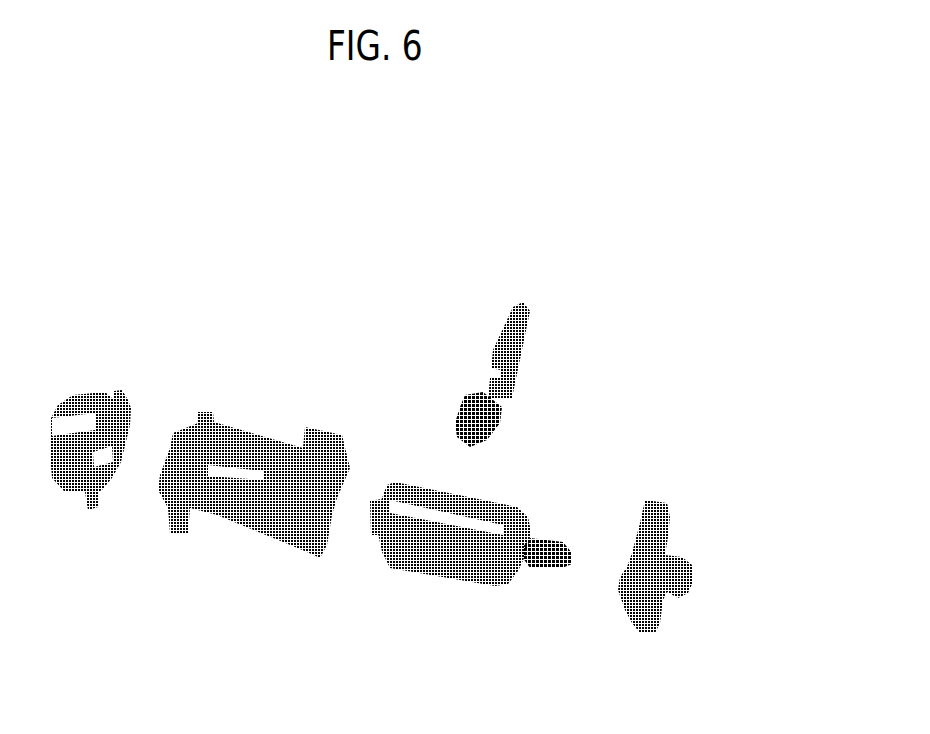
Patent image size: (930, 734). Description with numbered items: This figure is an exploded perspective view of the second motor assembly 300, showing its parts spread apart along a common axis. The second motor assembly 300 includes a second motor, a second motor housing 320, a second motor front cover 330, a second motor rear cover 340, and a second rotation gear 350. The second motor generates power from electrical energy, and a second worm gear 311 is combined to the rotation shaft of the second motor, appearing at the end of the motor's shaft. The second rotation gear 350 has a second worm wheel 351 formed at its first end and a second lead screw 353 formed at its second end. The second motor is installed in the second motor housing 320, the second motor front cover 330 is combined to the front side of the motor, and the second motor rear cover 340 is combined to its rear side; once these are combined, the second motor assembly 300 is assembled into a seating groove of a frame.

The second motor assembly 300 is at (634, 272).
The second worm gear 311 is at (542, 568).
The second motor housing 320 is at (240, 533).
The second motor front cover 330 is at (414, 567).
The second motor rear cover 340 is at (83, 393).
The second rotation gear 350 is at (496, 346).
The second worm wheel 351 is at (460, 410).
The second lead screw 353 is at (505, 322).